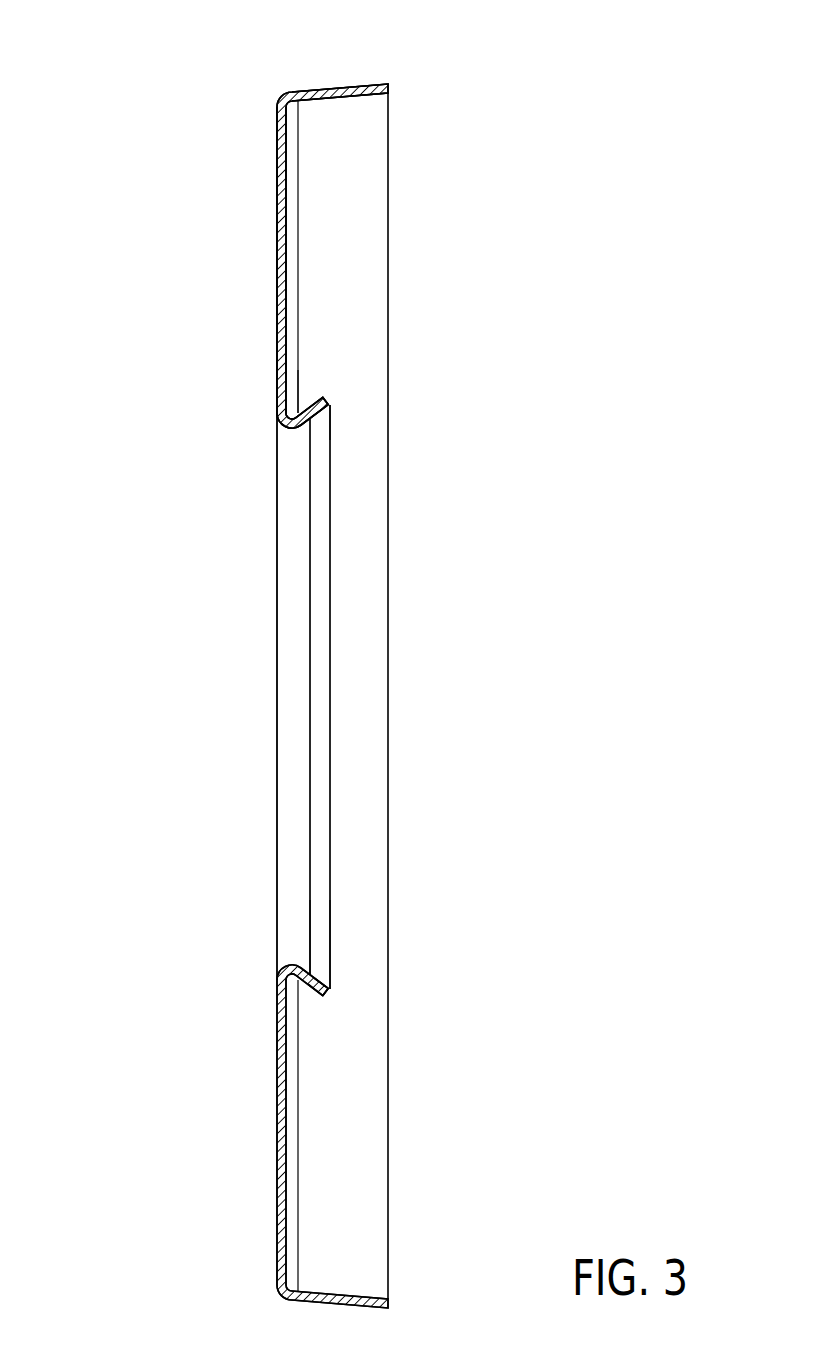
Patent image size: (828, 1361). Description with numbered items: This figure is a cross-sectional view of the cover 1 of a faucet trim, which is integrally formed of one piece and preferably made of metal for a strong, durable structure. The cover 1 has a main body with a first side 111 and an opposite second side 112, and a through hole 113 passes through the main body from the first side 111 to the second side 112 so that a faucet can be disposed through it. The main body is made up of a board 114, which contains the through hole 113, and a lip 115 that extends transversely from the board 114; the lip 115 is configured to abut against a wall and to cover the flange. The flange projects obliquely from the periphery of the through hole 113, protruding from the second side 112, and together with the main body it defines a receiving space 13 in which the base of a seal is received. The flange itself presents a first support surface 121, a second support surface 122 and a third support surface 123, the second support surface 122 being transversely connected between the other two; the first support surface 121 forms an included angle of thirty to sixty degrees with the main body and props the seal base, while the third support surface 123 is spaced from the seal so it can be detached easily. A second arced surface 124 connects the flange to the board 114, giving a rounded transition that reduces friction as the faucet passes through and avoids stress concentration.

The cover 1 is at (148, 62).
The first side 111 is at (240, 1172).
The second side 112 is at (470, 168).
The through hole 113 is at (240, 637).
The board 114 is at (283, 200).
The lip 115 is at (345, 88).
The first support surface 121 is at (312, 985).
The second support surface 122 is at (327, 992).
The third support surface 123 is at (320, 957).
The second arced surface 124 is at (297, 423).
The receiving space 13 is at (318, 388).